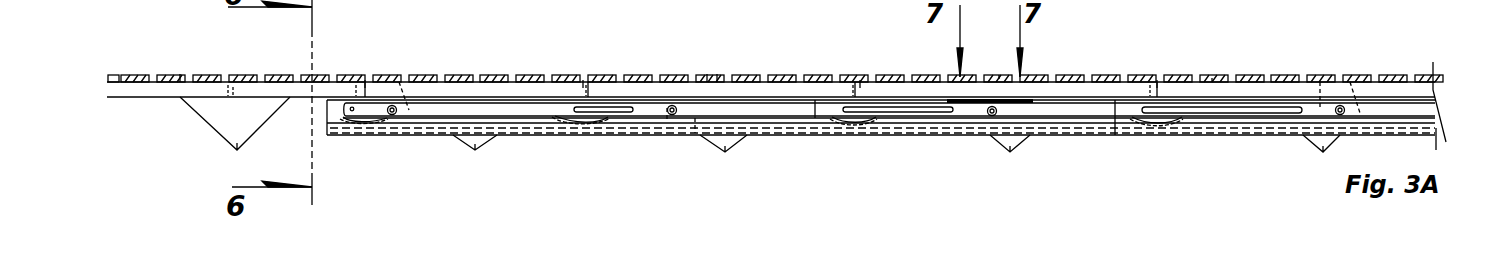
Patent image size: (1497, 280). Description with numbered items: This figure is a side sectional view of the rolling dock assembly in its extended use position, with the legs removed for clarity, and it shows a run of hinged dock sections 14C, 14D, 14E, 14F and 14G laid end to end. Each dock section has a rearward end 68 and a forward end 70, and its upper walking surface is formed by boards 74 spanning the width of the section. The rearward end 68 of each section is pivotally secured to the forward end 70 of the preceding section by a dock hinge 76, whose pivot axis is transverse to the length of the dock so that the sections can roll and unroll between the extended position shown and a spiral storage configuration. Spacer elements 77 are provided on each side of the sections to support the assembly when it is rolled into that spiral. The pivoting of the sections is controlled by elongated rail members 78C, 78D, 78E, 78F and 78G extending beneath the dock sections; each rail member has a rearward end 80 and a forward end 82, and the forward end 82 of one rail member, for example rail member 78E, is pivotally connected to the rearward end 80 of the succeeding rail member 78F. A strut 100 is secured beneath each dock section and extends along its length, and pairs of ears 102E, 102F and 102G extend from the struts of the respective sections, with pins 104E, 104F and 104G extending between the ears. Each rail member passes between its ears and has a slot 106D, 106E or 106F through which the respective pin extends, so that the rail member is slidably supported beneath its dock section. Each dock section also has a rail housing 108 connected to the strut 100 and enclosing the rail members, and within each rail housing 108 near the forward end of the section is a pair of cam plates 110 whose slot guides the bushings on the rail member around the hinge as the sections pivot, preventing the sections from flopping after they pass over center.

The dock section 14C is at (1238, 63).
The dock section 14D is at (1028, 63).
The dock section 14E is at (763, 63).
The dock section 14F is at (528, 64).
The dock section 14G is at (250, 63).
The rearward end 68 is at (356, 73).
The forward end 70 is at (112, 74).
The boards 74 is at (707, 74).
The dock hinge 76 is at (366, 80).
The spacer elements 77 is at (237, 150).
The rail member 78C is at (1377, 110).
The rail member 78D is at (1043, 113).
The rail member 78E is at (798, 120).
The rail member 78F is at (447, 112).
The rail member 78G is at (363, 135).
The rearward end 80 is at (667, 120).
The forward end 82 is at (399, 82).
The strut 100 is at (181, 74).
The ears 102E is at (833, 135).
The ears 102F is at (537, 120).
The ears 102G is at (327, 137).
The pin 104E is at (845, 135).
The pin 104F is at (590, 135).
The pin 104G is at (350, 138).
The slot 106D is at (1250, 113).
The slot 106E is at (930, 113).
The slot 106F is at (617, 80).
The rail housing 108 is at (688, 185).
The cam plates 110 is at (387, 135).